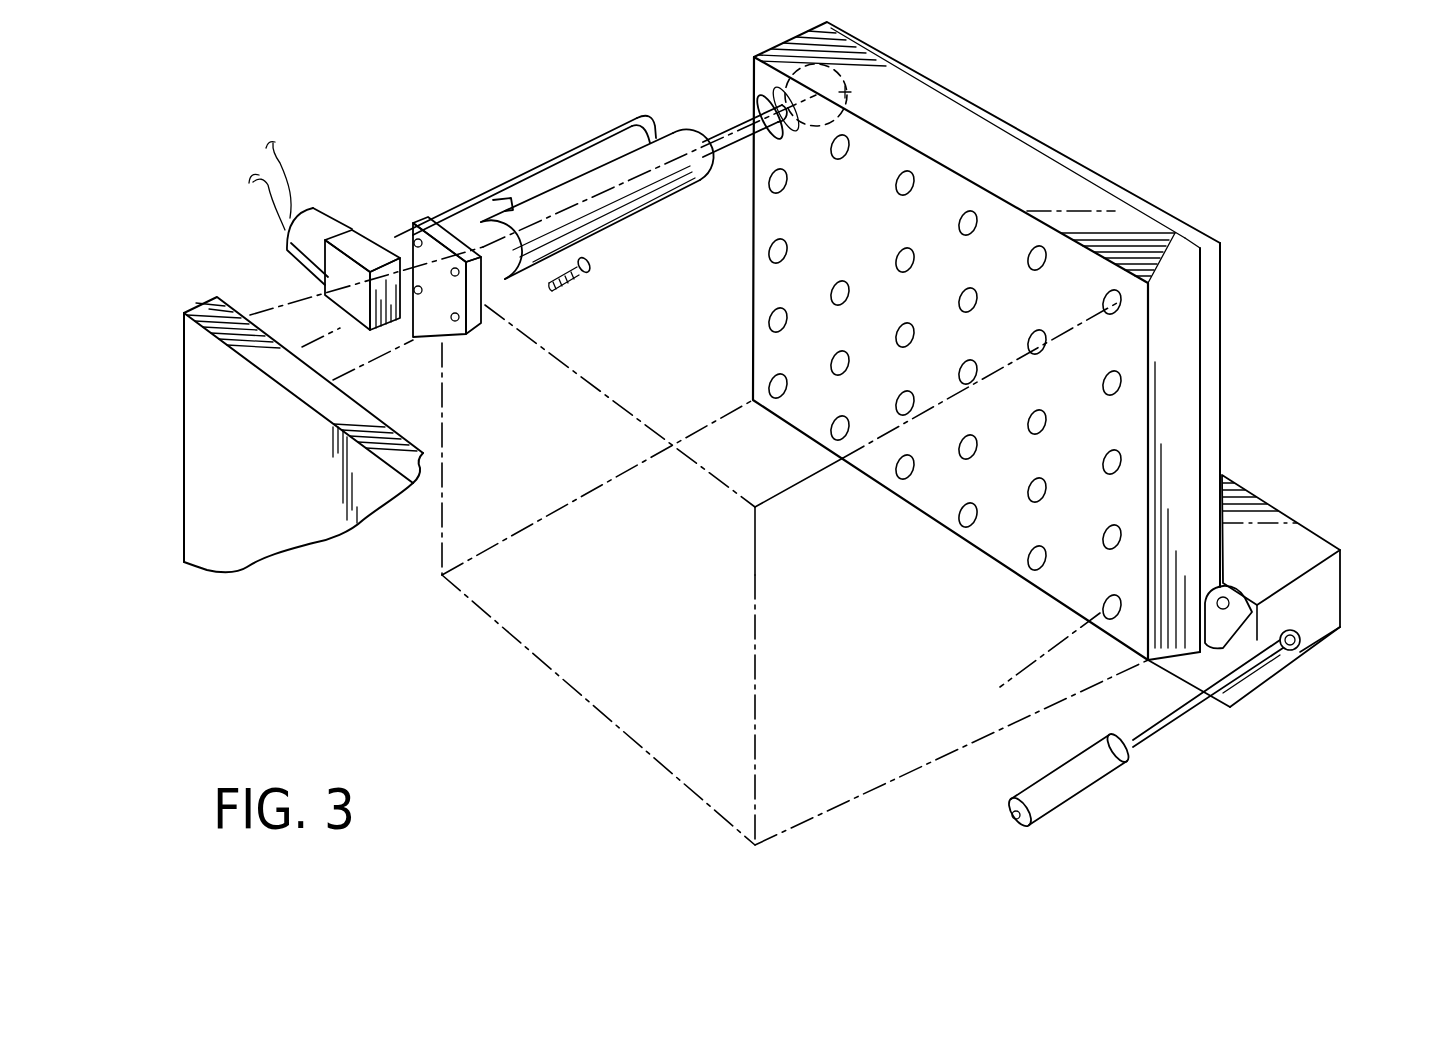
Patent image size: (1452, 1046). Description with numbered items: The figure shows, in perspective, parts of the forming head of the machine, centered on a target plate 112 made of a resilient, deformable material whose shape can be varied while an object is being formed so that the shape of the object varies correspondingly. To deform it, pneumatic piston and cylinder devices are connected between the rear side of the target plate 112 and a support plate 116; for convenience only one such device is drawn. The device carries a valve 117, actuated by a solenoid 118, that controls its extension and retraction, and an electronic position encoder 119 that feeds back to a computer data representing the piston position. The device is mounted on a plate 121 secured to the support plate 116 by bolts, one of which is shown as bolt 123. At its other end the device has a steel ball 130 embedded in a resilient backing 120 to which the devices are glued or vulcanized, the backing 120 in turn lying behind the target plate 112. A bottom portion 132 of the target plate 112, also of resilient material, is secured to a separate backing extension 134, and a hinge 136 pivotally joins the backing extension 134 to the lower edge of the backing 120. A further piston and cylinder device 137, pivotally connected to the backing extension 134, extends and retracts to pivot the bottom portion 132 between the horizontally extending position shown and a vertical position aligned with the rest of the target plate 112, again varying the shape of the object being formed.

The target plate 112 is at (1208, 351).
The support plate 116 is at (202, 400).
The valve 117 is at (362, 250).
The solenoid 118 is at (290, 252).
The electronic position encoder 119 is at (478, 237).
The resilient backing 120 is at (860, 243).
The plate 121 is at (442, 300).
The bolt 123 is at (566, 283).
The steel ball 130 is at (850, 88).
The bottom portion 132 is at (1293, 552).
The backing extension 134 is at (1323, 605).
The hinge 136 is at (1208, 652).
The piston and cylinder device 137 is at (1067, 787).